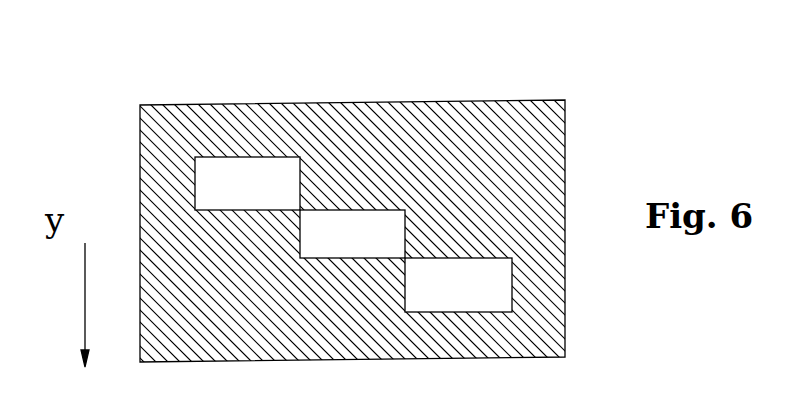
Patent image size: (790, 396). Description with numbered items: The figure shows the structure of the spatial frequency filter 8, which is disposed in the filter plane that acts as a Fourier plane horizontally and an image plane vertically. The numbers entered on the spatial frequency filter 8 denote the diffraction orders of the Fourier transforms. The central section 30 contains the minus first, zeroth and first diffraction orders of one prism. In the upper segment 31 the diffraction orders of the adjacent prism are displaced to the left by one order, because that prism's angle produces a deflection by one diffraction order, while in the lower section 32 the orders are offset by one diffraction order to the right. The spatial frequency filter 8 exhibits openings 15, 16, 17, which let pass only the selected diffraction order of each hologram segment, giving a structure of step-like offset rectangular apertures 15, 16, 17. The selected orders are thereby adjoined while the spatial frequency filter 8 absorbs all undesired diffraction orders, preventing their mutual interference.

The spatial frequency filter 8 is at (505, 90).
The opening 15 is at (293, 189).
The opening 16 is at (400, 241).
The opening 17 is at (505, 290).
The upper segment 31 is at (566, 175).
The central section 30 is at (566, 228).
The lower section 32 is at (566, 292).